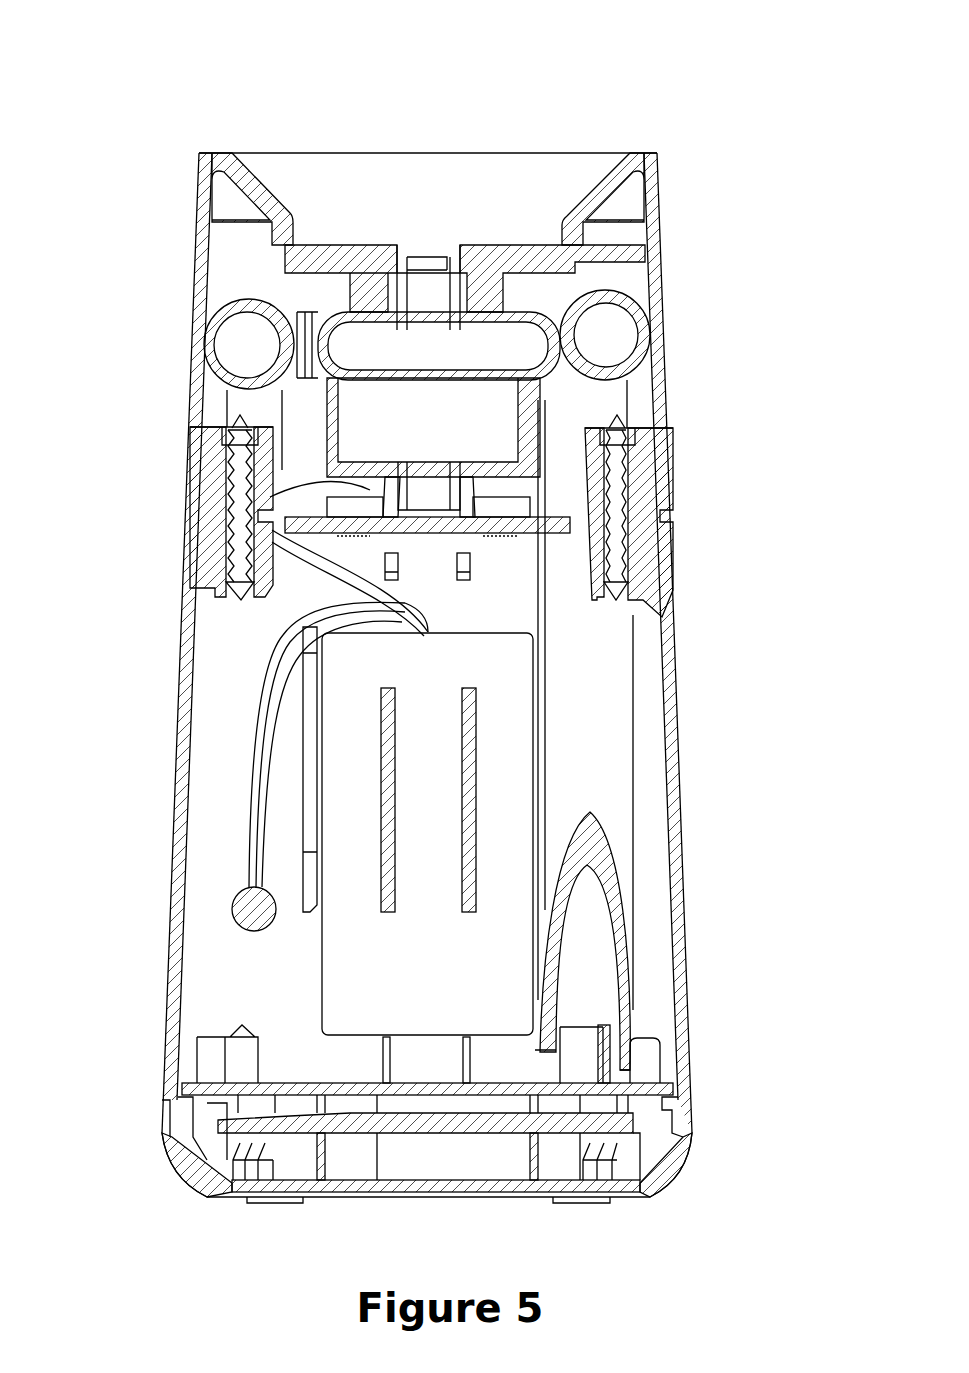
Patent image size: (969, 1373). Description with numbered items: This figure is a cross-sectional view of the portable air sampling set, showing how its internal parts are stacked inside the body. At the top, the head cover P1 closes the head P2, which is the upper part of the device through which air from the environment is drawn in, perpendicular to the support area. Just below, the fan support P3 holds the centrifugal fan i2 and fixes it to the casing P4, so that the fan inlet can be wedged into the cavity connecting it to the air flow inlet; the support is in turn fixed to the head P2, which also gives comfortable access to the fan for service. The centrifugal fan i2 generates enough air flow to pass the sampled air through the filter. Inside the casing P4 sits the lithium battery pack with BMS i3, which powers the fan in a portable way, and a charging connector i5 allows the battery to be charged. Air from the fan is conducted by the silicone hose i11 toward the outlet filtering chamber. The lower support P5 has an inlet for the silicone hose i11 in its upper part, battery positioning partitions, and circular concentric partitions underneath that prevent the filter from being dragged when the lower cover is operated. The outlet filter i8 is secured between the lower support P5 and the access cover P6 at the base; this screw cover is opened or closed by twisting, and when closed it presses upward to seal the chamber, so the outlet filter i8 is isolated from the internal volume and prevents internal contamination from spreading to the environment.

The head cover P1 is at (640, 155).
The head P2 is at (640, 248).
The fan support P3 is at (483, 524).
The casing P4 is at (475, 782).
The lower support P5 is at (622, 1087).
The access cover to outlet filter P6 is at (622, 1190).
The centrifugal fan i2 is at (317, 340).
The lithium battery pack with BMS i3 is at (505, 847).
The charging connector i5 is at (255, 910).
The outlet filter i8 is at (622, 1127).
The silicone hose i11 is at (233, 313).